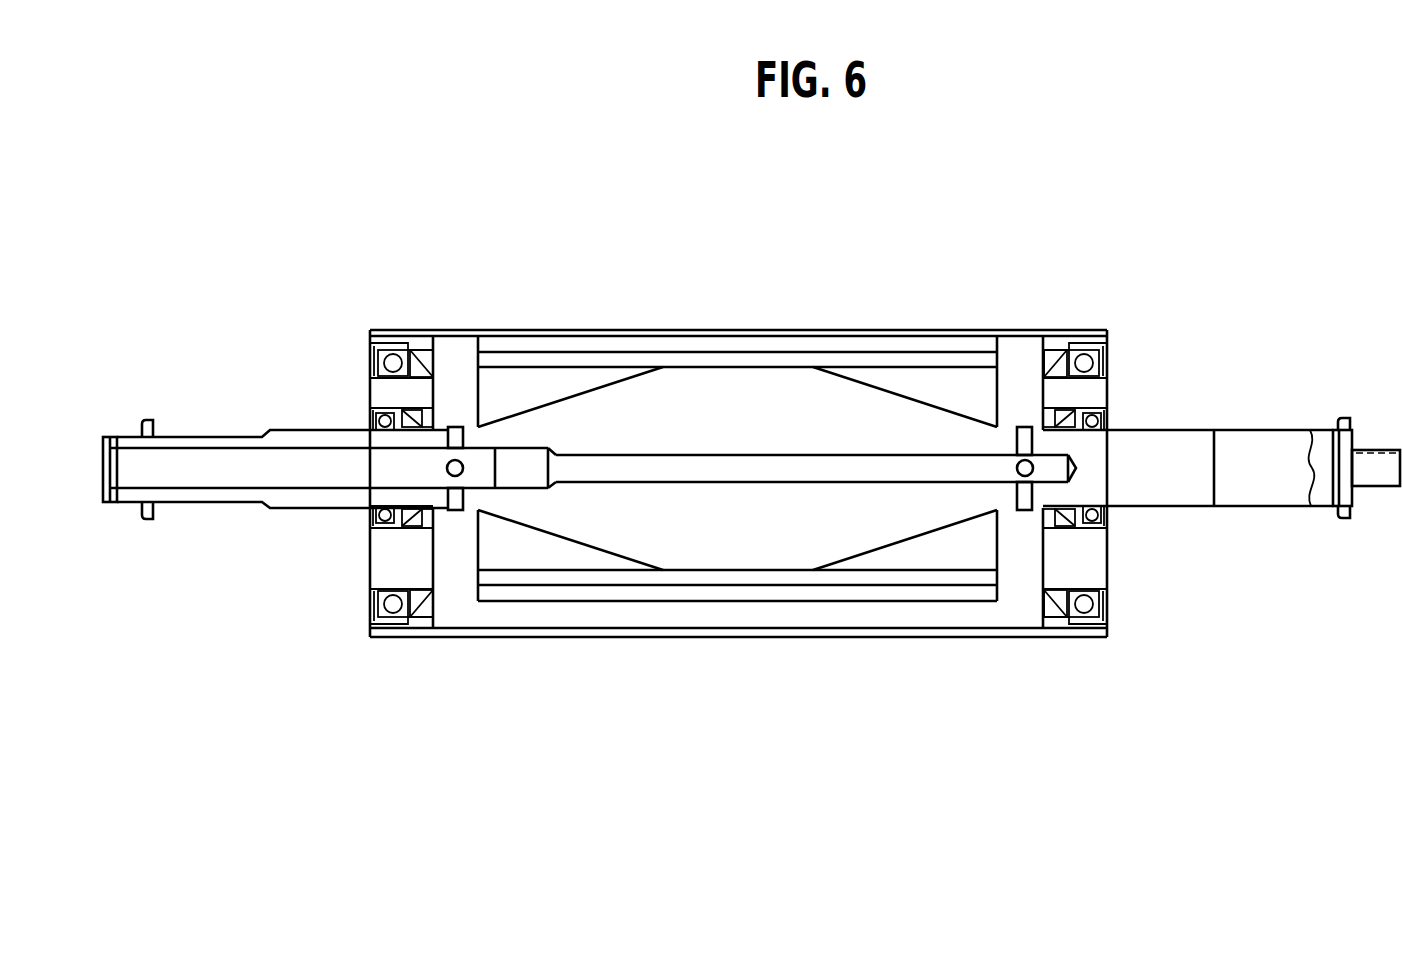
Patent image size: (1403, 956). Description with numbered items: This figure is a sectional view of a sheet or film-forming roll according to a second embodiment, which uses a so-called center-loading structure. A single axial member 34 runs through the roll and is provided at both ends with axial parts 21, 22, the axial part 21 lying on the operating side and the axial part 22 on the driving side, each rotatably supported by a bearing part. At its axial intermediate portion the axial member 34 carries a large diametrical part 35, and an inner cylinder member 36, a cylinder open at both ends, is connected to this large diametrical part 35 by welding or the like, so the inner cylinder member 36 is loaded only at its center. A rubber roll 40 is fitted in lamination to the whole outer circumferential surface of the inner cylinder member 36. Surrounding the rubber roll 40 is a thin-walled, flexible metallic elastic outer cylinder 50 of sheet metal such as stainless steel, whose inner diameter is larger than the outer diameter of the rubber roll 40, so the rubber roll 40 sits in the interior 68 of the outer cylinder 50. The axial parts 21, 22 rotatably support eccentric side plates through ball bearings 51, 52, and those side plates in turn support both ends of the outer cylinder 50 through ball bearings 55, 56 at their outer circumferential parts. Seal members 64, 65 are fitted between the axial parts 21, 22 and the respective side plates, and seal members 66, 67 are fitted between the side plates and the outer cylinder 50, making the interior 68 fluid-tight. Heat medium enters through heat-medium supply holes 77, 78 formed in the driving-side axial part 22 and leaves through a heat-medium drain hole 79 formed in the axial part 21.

The axial part 21 is at (329, 498).
The axial part 22 is at (1221, 501).
The axial member 34 is at (738, 452).
The large diametrical part 35 is at (635, 404).
The inner cylinder member 36 is at (737, 315).
The rubber roll 40 is at (738, 301).
The metallic elastic outer cylinder 50 is at (738, 675).
The ball bearing 51 is at (364, 558).
The ball bearing 52 is at (1106, 537).
The ball bearing 55 is at (397, 647).
The ball bearing 56 is at (1075, 644).
The seal member 64 is at (368, 580).
The seal member 65 is at (1109, 569).
The seal member 66 is at (427, 670).
The seal member 67 is at (1007, 639).
The interior 68 is at (737, 641).
The heat-medium supply hole 77 is at (860, 425).
The heat-medium supply hole 78 is at (968, 472).
The heat-medium drain hole 79 is at (455, 561).